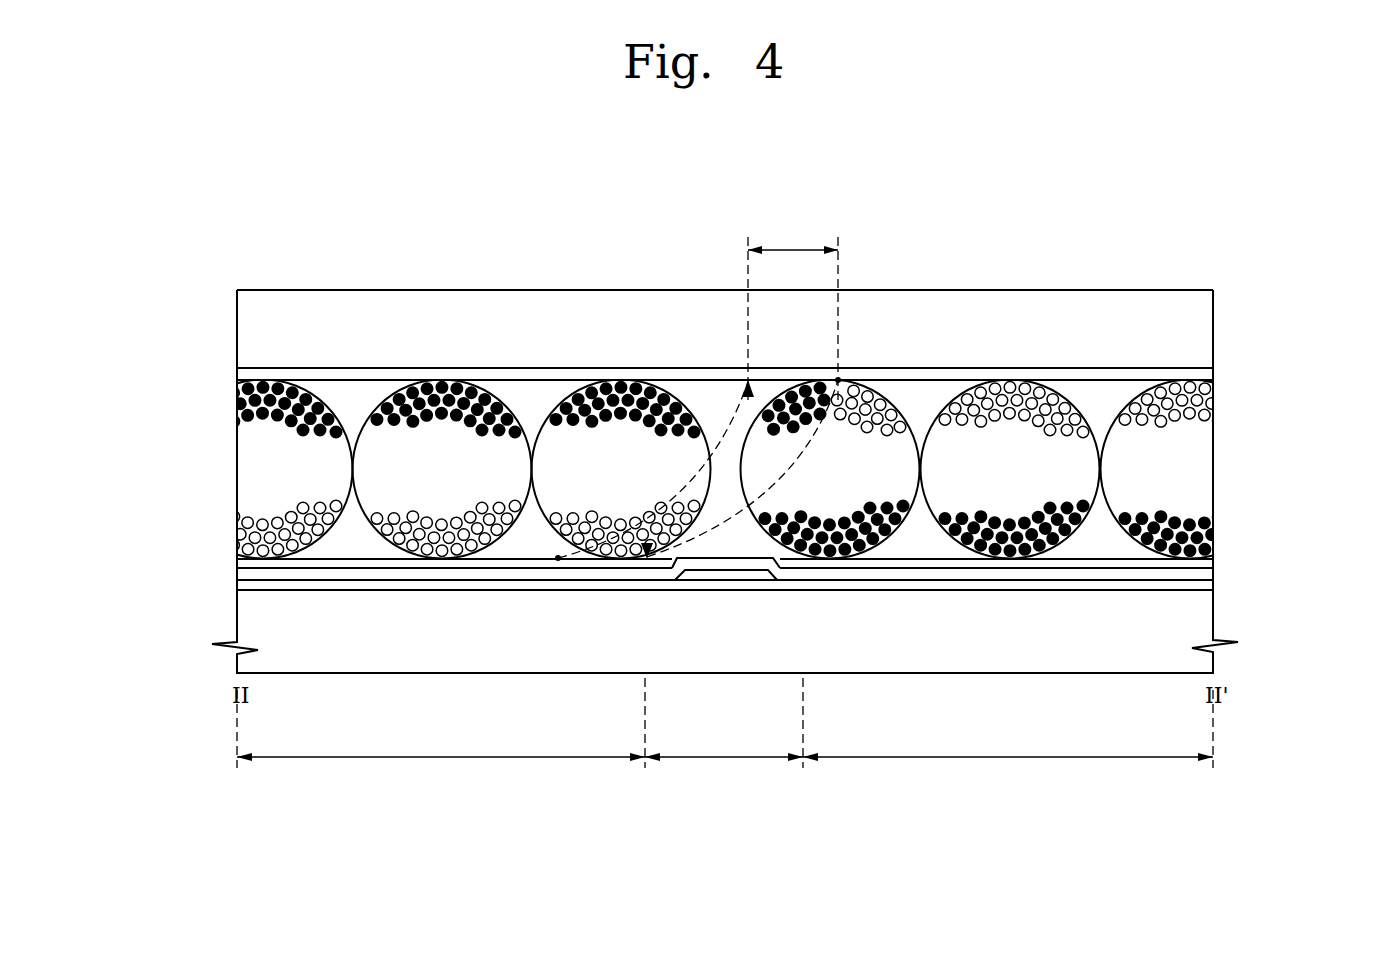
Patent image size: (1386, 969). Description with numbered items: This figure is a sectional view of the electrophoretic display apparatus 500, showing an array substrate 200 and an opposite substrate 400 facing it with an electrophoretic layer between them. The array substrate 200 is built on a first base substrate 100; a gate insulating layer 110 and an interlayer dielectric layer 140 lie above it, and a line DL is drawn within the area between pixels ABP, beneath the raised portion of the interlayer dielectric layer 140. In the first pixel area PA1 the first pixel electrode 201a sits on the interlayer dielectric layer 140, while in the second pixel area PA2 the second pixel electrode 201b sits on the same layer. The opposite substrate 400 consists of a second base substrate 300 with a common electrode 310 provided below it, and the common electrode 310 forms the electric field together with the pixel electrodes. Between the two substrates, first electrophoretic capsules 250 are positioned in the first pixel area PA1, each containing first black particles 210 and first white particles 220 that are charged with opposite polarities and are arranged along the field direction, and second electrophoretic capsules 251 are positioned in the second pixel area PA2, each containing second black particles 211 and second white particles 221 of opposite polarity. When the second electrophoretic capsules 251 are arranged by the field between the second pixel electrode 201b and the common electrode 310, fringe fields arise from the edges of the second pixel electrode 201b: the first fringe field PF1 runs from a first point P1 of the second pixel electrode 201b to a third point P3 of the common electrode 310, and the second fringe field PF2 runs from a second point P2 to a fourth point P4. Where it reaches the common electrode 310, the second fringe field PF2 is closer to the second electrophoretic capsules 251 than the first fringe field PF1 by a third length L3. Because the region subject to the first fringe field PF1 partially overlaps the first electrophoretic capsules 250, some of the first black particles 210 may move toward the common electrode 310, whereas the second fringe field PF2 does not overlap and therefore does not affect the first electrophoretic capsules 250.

The electrophoretic display apparatus 500 is at (1370, 207).
The opposite substrate 400 is at (1305, 312).
The second base substrate 300 is at (1202, 327).
The common electrode 310 is at (1202, 371).
The first electrophoretic capsules 250 is at (1130, 392).
The second electrophoretic capsules 251 is at (567, 396).
The first white particles 220 is at (1195, 428).
The first black particles 210 is at (790, 385).
The second black particles 211 is at (617, 392).
The second white particles 221 is at (250, 498).
The array substrate 200 is at (1305, 515).
The first pixel electrode 201a is at (1212, 558).
The second pixel electrode 201b is at (237, 564).
The interlayer dielectric layer 140 is at (1213, 571).
The gate insulating layer 110 is at (1213, 590).
The first base substrate 100 is at (1210, 612).
The data line DL is at (728, 580).
The first fringe field PF1 is at (785, 475).
The second fringe field PF2 is at (692, 477).
The first point P1 is at (647, 562).
The second point P2 is at (557, 562).
The third point P3 is at (838, 380).
The fourth point P4 is at (748, 380).
The third length L3 is at (793, 311).
The first pixel area PA1 is at (1008, 771).
The second pixel area PA2 is at (441, 771).
The area between pixels ABP is at (724, 771).